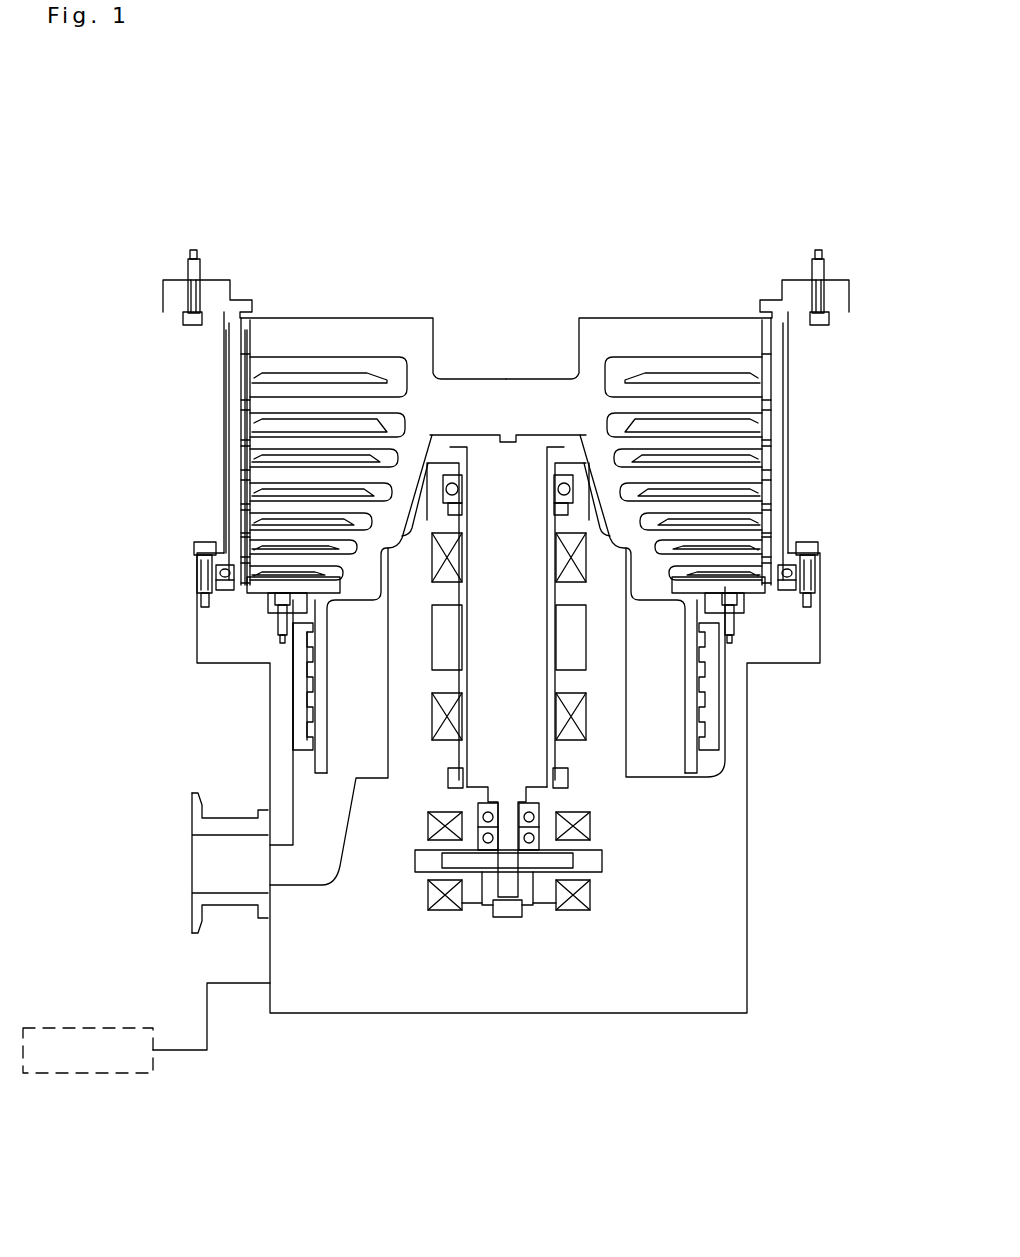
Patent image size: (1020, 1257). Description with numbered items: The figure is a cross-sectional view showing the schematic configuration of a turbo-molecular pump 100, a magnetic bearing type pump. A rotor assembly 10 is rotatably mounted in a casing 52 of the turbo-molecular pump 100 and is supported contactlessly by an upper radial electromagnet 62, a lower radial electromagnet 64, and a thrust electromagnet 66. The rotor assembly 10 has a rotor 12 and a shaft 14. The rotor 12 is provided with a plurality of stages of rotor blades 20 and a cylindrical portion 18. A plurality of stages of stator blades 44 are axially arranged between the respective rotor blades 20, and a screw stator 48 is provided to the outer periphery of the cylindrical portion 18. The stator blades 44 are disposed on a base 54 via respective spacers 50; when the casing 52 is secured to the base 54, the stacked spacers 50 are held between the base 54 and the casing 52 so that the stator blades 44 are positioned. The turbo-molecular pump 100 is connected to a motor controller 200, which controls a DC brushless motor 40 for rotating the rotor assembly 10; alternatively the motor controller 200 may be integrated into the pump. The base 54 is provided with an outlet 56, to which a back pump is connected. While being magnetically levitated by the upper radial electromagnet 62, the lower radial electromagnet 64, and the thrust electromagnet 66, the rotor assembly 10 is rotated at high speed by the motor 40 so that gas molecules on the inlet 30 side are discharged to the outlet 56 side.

The turbo-molecular pump 100 is at (827, 188).
The rotor assembly 10 is at (546, 163).
The rotor 12 is at (511, 408).
The shaft 14 is at (504, 500).
The inlet 30 is at (237, 298).
The rotor blades 20 is at (312, 472).
The stator blades 44 is at (283, 492).
The casing 52 is at (232, 530).
The spacers 50 is at (247, 502).
The base 54 is at (238, 632).
The cylindrical portion 18 is at (320, 665).
The screw stator 48 is at (300, 720).
The outlet 56 is at (203, 876).
The upper radial electromagnet 62 is at (585, 575).
The DC motor 40 is at (587, 655).
The lower radial electromagnet 64 is at (585, 735).
The thrust electromagnet 66 is at (592, 825).
The motor controller 200 is at (80, 1073).